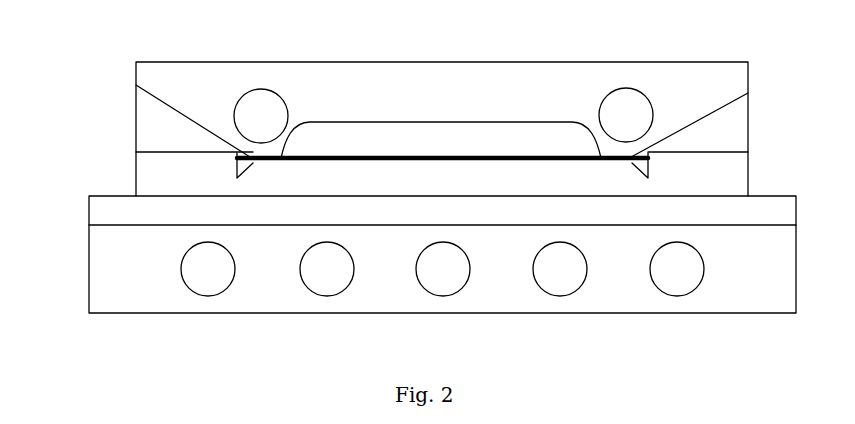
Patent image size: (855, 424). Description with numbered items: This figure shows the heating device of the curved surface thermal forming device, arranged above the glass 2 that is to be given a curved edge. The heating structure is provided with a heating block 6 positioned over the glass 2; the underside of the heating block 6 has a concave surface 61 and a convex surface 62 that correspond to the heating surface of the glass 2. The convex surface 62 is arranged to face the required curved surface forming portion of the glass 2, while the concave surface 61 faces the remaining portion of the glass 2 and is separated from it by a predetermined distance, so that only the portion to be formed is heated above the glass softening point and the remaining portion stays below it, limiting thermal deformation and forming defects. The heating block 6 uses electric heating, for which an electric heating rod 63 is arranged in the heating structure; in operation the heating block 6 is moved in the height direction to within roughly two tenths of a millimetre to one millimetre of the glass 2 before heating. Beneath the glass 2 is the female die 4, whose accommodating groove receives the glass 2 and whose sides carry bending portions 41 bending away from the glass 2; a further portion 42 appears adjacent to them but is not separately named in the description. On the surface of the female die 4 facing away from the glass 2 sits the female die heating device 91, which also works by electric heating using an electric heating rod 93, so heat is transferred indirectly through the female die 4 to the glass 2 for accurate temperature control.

The glass 2 is at (393, 162).
The female die 4 is at (152, 180).
The heating block 6 is at (170, 72).
The bending portions 41 is at (258, 162).
The second clamping portion 42 is at (623, 173).
The concave surface 61 is at (427, 120).
The convex surface 62 is at (136, 85).
The electric heating rod 63 is at (262, 110).
The female die heating device 91 is at (110, 278).
The electric heating rod 93 is at (205, 278).